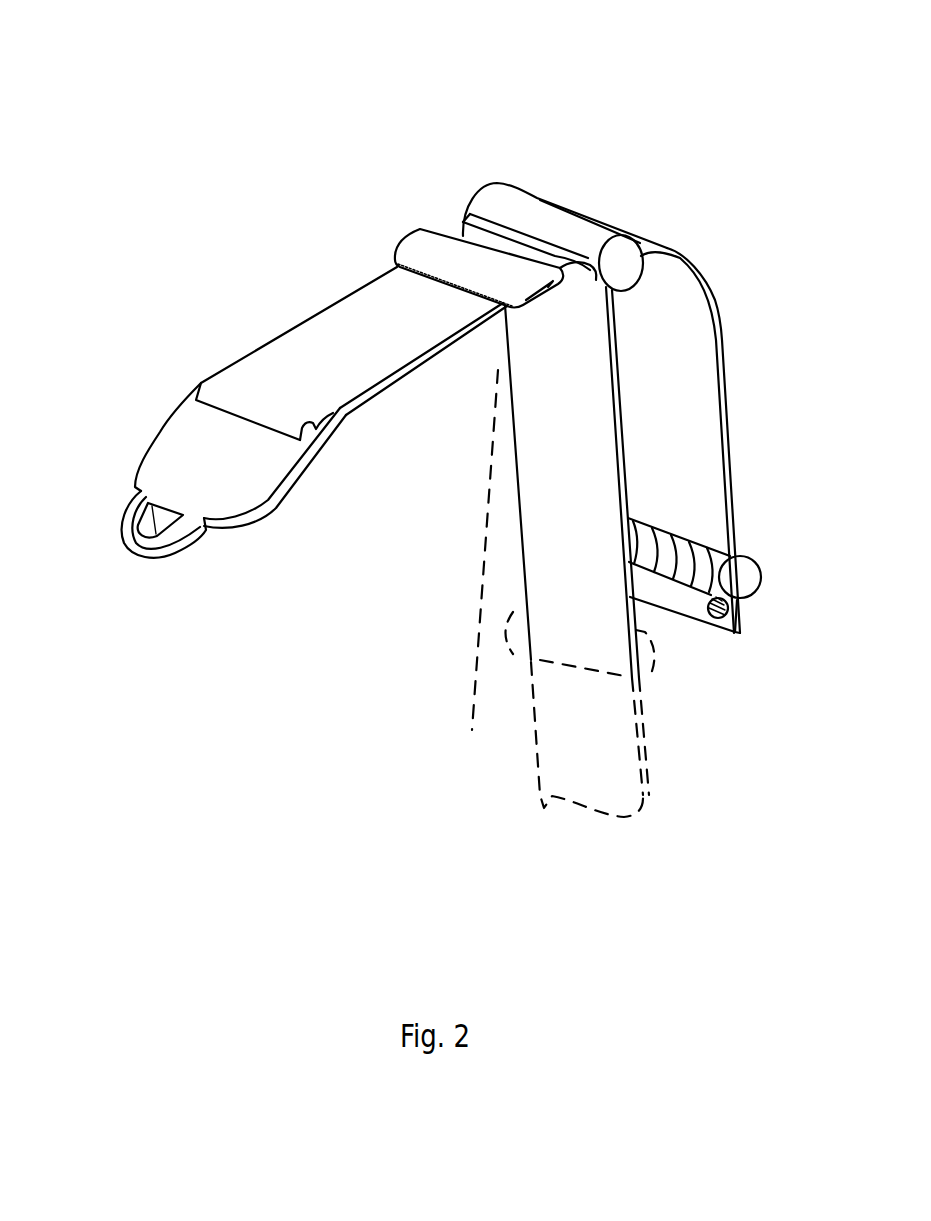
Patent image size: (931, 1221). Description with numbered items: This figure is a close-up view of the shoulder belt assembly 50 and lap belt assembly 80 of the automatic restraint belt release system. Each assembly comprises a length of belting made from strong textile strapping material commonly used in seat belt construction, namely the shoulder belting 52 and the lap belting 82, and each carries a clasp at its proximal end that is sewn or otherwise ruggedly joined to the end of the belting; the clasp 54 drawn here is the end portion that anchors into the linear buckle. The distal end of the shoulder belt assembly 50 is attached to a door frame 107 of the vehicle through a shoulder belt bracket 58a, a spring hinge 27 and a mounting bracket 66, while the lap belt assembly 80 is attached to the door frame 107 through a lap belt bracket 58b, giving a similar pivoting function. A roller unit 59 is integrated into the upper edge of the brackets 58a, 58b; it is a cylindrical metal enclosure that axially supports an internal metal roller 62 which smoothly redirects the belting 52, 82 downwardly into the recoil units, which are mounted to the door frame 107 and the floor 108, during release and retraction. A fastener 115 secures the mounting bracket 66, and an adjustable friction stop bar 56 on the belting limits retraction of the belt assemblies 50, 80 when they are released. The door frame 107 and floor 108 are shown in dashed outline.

The shoulder belt assembly 50 is at (436, 414).
The lap belt assembly 80 is at (126, 142).
The shoulder belting 52 is at (364, 498).
The lap belting 82 is at (282, 360).
The strap end member 54 is at (175, 437).
The stop bar 56 is at (440, 250).
The roller unit 59 is at (567, 227).
The roller 62 is at (584, 272).
The shoulder belt bracket 58a is at (708, 521).
The lap belt bracket 58b is at (727, 401).
The spring hinge 27 is at (748, 572).
The mounting bracket 66 is at (737, 613).
The fastener 115 is at (718, 620).
The door frame 107 is at (510, 714).
The floor 108 is at (526, 657).